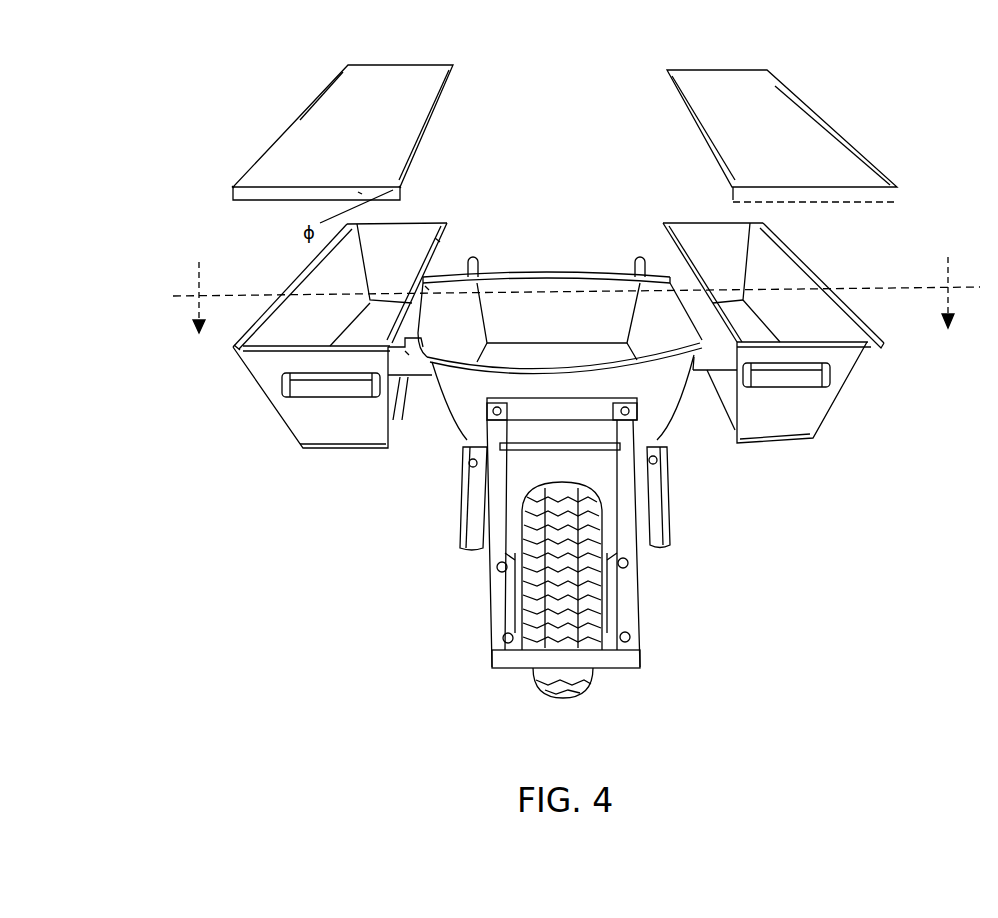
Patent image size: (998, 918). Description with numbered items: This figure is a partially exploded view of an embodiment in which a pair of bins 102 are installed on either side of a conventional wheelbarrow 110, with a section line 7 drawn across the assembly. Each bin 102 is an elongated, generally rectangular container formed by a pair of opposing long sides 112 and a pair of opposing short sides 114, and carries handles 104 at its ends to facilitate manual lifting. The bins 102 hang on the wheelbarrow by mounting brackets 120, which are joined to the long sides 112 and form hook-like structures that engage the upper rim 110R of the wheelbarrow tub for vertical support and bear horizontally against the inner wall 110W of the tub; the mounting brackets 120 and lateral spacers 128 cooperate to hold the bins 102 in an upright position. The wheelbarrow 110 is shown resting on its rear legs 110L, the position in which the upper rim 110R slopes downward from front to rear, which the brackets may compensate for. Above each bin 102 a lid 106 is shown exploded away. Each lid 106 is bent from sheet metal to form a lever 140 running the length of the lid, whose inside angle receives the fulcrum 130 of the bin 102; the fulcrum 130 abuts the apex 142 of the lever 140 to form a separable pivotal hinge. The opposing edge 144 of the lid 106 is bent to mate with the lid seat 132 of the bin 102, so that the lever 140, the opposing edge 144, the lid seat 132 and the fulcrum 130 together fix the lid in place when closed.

The bin 102 is at (790, 418).
The handles 104 is at (807, 380).
The lid 106 is at (565, 133).
The wheelbarrow 110 is at (393, 589).
The inner wall of the wheelbarrow 110W is at (560, 348).
The upper rim of the wheelbarrow tub 110R is at (480, 365).
The rear legs of the wheelbarrow 110L is at (660, 493).
The long sides 112 is at (340, 287).
The short sides 114 is at (310, 397).
The mounting bracket 120 is at (427, 288).
The lateral spacers 128 is at (407, 353).
The fulcrum 130 is at (437, 240).
The lid seat 132 is at (238, 347).
The lever 140 is at (358, 193).
The apex of the lever 142 is at (400, 187).
The opposing edge of the lid 144 is at (233, 187).
The section line 7- 7 is at (575, 295).